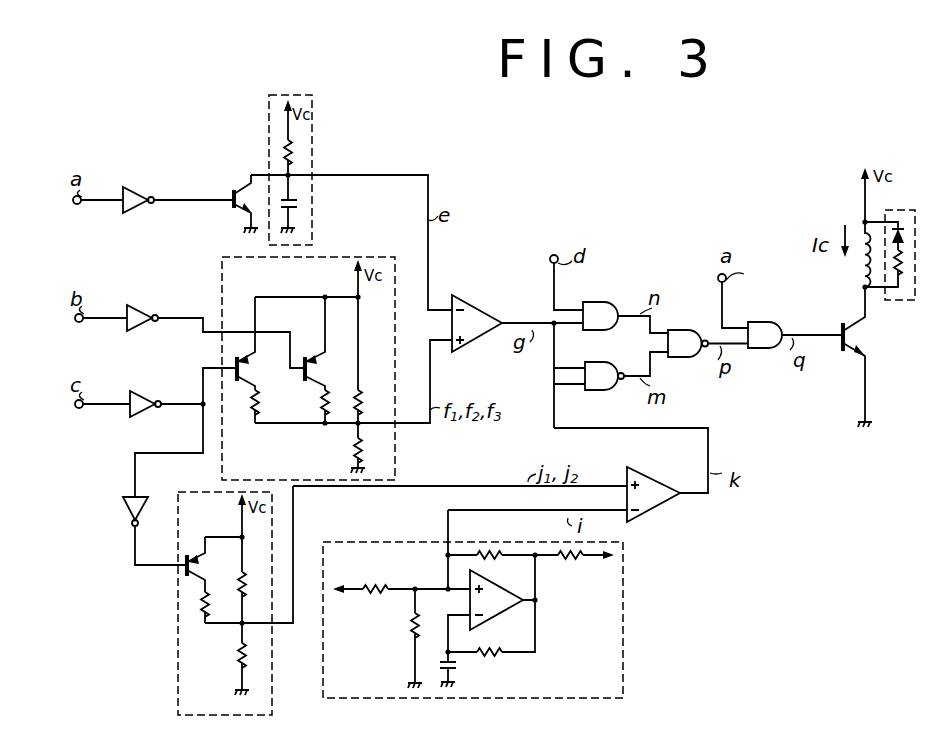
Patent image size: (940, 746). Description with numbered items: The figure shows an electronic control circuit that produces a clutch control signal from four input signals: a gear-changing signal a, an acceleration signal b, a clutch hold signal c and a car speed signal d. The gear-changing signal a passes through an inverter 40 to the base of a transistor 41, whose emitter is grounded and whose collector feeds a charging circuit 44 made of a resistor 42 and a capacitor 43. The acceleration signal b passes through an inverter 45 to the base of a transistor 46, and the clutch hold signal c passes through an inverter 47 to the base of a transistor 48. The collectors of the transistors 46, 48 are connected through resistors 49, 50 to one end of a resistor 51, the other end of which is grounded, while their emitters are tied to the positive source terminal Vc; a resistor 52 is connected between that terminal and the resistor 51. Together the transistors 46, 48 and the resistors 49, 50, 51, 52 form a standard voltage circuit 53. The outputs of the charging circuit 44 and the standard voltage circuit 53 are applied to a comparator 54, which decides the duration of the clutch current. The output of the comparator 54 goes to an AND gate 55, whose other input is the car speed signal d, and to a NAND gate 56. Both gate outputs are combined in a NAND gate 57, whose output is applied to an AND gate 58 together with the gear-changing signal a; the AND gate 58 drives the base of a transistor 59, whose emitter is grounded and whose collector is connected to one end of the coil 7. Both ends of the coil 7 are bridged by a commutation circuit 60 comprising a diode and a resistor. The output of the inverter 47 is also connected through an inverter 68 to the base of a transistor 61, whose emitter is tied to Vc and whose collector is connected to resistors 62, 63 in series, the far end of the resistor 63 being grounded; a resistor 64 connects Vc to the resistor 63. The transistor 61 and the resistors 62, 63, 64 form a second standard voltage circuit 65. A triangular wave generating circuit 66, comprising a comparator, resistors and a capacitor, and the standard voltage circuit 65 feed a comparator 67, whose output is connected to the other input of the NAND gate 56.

The coil 7 is at (860, 276).
The inverter 40 is at (162, 186).
The transistor 41 is at (232, 212).
The resistor 42 is at (295, 150).
The capacitor 43 is at (298, 206).
The charging circuit 44 is at (268, 136).
The inverter 45 is at (166, 305).
The transistor 46 is at (332, 364).
The inverter 47 is at (166, 390).
The transistor 48 is at (250, 378).
The resistor 49 is at (320, 404).
The resistor 50 is at (250, 412).
The resistor 51 is at (356, 448).
The resistor 52 is at (372, 390).
The standard voltage circuit 53 is at (372, 258).
The comparator 54 is at (498, 300).
The AND gate 55 is at (622, 296).
The NAND gate 56 is at (622, 360).
The NAND gate 57 is at (702, 326).
The AND gate 58 is at (788, 316).
The transistor 59 is at (867, 340).
The commutation circuit 60 is at (916, 202).
The transistor 61 is at (190, 545).
The resistor 62 is at (238, 580).
The resistor 63 is at (238, 656).
The resistor 64 is at (222, 598).
The standard voltage circuit 65 is at (178, 680).
The triangular wave generating circuit 66 is at (623, 647).
The comparator 67 is at (650, 510).
The inverter 68 is at (128, 512).